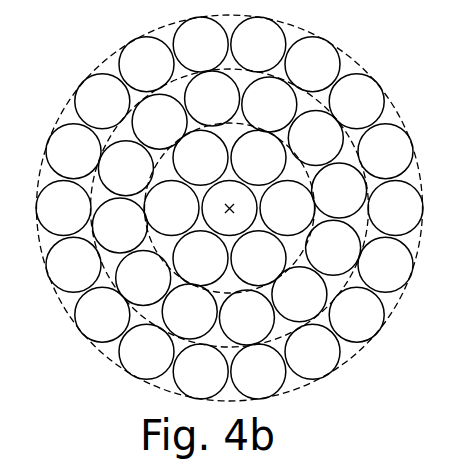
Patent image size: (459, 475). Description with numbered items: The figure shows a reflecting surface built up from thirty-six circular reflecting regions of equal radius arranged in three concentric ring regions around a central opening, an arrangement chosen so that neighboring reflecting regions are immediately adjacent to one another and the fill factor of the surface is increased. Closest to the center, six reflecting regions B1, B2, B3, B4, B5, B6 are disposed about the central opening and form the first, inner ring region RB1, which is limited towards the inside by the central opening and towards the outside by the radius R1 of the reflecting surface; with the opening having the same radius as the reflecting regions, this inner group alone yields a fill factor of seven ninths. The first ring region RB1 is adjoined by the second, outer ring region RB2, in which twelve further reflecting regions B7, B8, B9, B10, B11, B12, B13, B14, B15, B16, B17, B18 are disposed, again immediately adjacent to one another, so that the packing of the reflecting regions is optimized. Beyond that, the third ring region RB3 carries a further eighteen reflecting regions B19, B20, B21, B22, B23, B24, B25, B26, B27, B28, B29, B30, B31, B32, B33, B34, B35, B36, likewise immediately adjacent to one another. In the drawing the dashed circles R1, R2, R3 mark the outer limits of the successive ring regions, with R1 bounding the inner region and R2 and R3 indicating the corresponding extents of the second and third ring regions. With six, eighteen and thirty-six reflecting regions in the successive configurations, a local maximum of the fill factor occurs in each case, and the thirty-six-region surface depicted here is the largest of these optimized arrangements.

The reflecting region B1 is at (200, 258).
The reflecting region B2 is at (171, 208).
The reflecting region B3 is at (200, 157).
The reflecting region B4 is at (258, 157).
The reflecting region B5 is at (287, 208).
The reflecting region B6 is at (258, 258).
The reflecting region B7 is at (299, 294).
The reflecting region B8 is at (246, 317).
The reflecting region B9 is at (189, 311).
The reflecting region B10 is at (143, 277).
The reflecting region B11 is at (119, 225).
The reflecting region B12 is at (125, 168).
The reflecting region B13 is at (159, 121).
The reflecting region B14 is at (212, 98).
The reflecting region B15 is at (269, 104).
The reflecting region B16 is at (315, 138).
The reflecting region B17 is at (339, 190).
The reflecting region B18 is at (333, 247).
The reflecting region B19 is at (356, 314).
The reflecting region B20 is at (312, 351).
The reflecting region B21 is at (258, 371).
The reflecting region B22 is at (200, 371).
The reflecting region B23 is at (146, 351).
The reflecting region B24 is at (102, 314).
The reflecting region B25 is at (73, 264).
The reflecting region B26 is at (63, 208).
The reflecting region B27 is at (73, 151).
The reflecting region B28 is at (102, 101).
The reflecting region B29 is at (146, 64).
The reflecting region B30 is at (200, 44).
The reflecting region B31 is at (258, 44).
The reflecting region B32 is at (312, 64).
The reflecting region B33 is at (356, 101).
The reflecting region B34 is at (385, 151).
The reflecting region B35 is at (395, 208).
The reflecting region B36 is at (385, 264).
The radius of the reflecting surface R1 is at (202, 263).
The second ring of positions R2 is at (237, 235).
The third ring of positions R3 is at (231, 208).
The first ring region RB1 is at (112, 142).
The second ring region RB2 is at (44, 190).
The third ring region RB3 is at (65, 300).